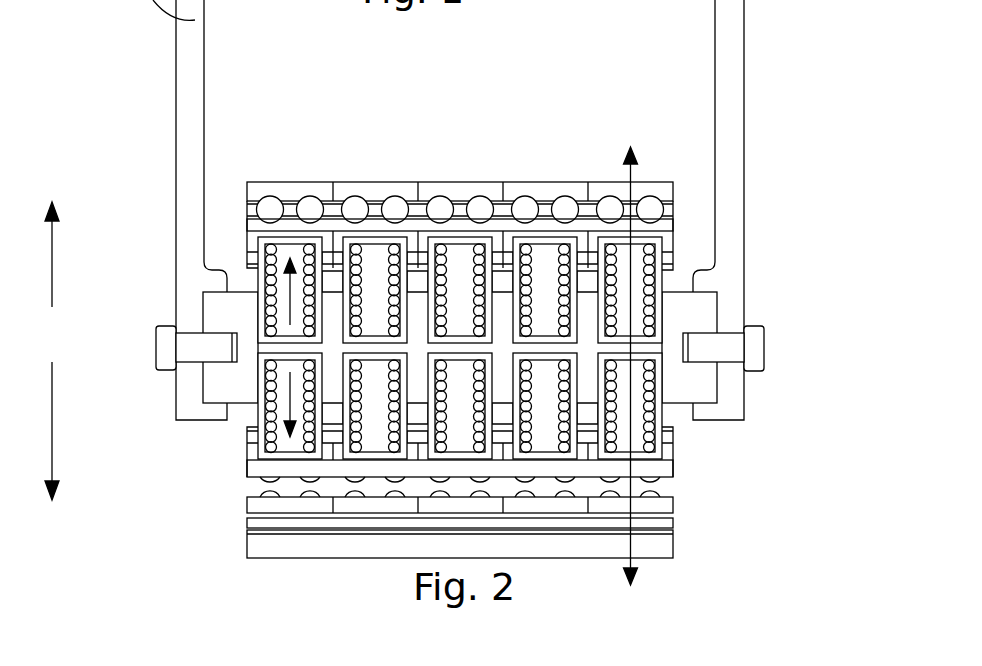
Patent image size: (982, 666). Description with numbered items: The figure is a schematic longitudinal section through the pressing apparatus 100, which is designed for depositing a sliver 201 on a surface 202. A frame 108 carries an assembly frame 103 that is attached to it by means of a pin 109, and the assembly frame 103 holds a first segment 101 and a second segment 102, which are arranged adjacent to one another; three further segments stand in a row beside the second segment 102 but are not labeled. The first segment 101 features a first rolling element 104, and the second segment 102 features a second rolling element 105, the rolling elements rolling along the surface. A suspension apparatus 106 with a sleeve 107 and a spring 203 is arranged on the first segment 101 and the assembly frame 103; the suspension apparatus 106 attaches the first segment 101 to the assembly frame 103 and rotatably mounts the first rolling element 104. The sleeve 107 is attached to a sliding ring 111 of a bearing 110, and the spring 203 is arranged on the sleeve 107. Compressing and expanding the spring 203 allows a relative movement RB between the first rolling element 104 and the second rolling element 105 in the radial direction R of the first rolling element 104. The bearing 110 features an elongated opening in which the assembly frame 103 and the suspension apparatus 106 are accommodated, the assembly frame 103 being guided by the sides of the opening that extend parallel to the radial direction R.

The pressing apparatus 100 is at (524, 103).
The first segment 101 is at (270, 180).
The second segment 102 is at (365, 180).
The assembly frame 103 is at (222, 322).
The first rolling element 104 is at (258, 192).
The second rolling element 105 is at (390, 192).
The suspension apparatus 106 is at (250, 412).
The sleeve 107 is at (252, 258).
The frame 108 is at (732, 27).
The pin 109 is at (175, 343).
The bearing 110 is at (262, 207).
The sliding ring 111 is at (327, 232).
The sliver 201 is at (675, 523).
The surface 202 is at (675, 548).
The spring 203 is at (249, 239).
The relative movement RB is at (630, 168).
The radial direction R is at (52, 292).